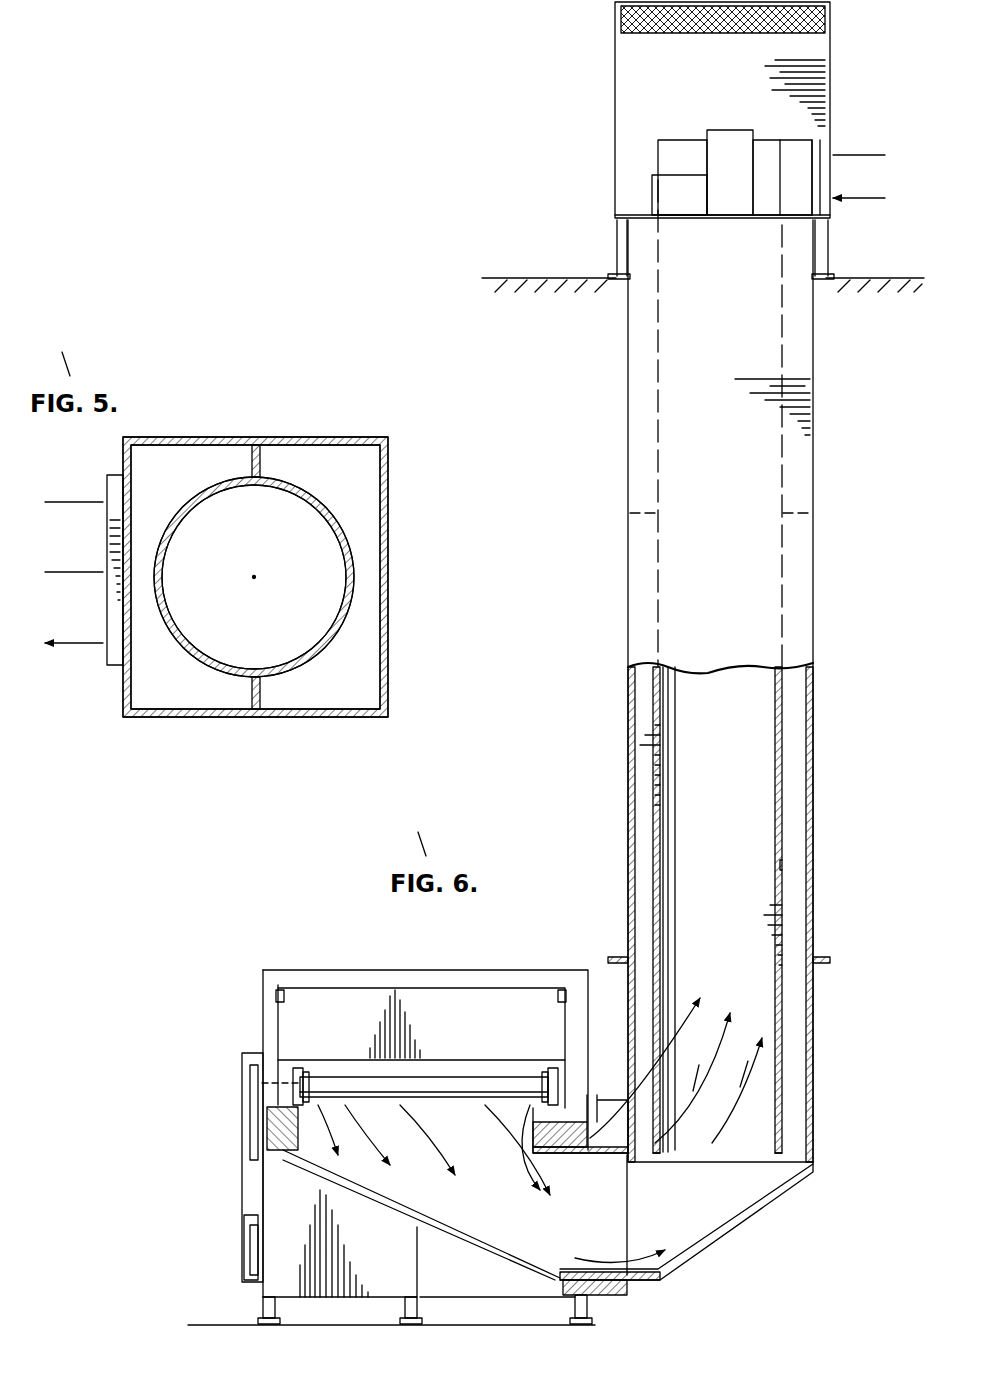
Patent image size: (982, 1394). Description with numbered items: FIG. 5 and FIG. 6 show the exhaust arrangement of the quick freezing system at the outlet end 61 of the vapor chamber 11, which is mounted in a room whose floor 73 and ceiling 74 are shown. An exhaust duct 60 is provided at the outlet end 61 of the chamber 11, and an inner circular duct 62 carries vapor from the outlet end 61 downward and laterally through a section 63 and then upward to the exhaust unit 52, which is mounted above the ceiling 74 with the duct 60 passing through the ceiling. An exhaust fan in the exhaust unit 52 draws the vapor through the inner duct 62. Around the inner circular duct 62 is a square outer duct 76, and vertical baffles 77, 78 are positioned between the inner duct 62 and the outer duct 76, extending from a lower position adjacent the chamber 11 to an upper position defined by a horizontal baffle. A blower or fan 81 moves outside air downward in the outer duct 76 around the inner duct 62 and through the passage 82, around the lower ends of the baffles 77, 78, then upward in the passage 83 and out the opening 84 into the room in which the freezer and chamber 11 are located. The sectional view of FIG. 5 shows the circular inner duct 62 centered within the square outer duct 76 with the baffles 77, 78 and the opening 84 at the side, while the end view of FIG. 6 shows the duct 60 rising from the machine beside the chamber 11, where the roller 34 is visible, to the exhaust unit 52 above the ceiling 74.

In FIG. 6, the vapor chamber 11 is at (248, 991).
In FIG. 6, the applicator roller 34 is at (464, 1086).
In FIG. 6, the exhaust unit 52 is at (590, 62).
In FIG. 6, the exhaust duct 60 is at (830, 612).
In FIG. 5, the exhaust duct 60 is at (164, 724).
In FIG. 6, the outlet end 61 is at (308, 1063).
In FIG. 6, the inner circular duct 62 is at (782, 730).
In FIG. 5, the inner circular duct 62 is at (345, 530).
In FIG. 6, the section 63 is at (580, 1230).
In FIG. 6, the floor 73 is at (213, 1323).
In FIG. 6, the ceiling 74 is at (544, 278).
In FIG. 6, the square outer duct 76 is at (813, 805).
In FIG. 5, the square outer duct 76 is at (372, 437).
In FIG. 6, the vertical baffle 77 is at (793, 860).
In FIG. 5, the vertical baffle 77 is at (254, 460).
In FIG. 6, the vertical baffle 78 is at (632, 800).
In FIG. 5, the vertical baffle 78 is at (268, 690).
In FIG. 6, the blower or fan 81 is at (724, 130).
In FIG. 5, the passage 82 is at (355, 663).
In FIG. 5, the passage 83 is at (140, 680).
In FIG. 5, the opening 84 is at (107, 544).